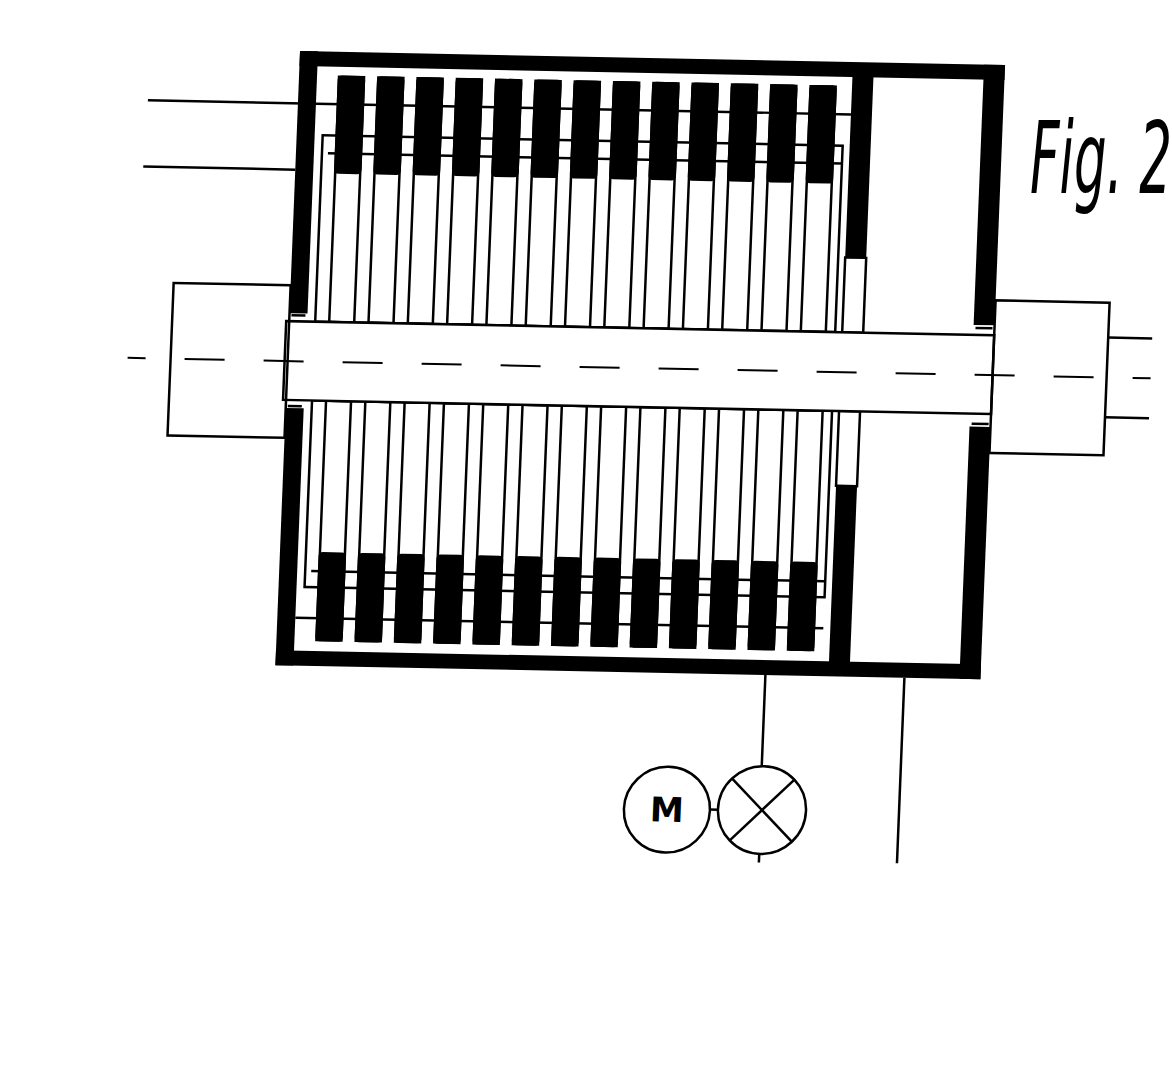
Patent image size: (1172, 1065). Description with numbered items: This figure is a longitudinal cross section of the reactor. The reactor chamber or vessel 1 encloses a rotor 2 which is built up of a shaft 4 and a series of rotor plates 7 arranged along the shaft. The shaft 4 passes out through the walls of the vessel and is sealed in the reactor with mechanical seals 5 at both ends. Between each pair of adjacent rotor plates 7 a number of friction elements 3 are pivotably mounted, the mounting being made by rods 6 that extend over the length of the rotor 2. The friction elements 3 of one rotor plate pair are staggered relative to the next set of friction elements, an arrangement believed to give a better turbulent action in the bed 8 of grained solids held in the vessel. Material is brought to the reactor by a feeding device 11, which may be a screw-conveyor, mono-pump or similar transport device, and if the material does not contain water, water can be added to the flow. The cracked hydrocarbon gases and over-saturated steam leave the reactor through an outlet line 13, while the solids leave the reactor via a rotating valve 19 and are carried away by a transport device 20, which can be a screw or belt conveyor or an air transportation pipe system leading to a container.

The reactor chamber or vessel 1 is at (706, 60).
The rotor 2 is at (847, 307).
The friction elements 3 is at (849, 342).
The shaft 4 is at (887, 329).
The mechanical seals 5 is at (207, 283).
The rods 6 is at (833, 163).
The rotor plates 7 is at (836, 222).
The bed of grained solids 8 is at (603, 88).
The feeding device 11 is at (218, 168).
The outlet line 13 is at (905, 723).
The rotating valve 19 is at (780, 770).
The transport device 20 is at (809, 721).